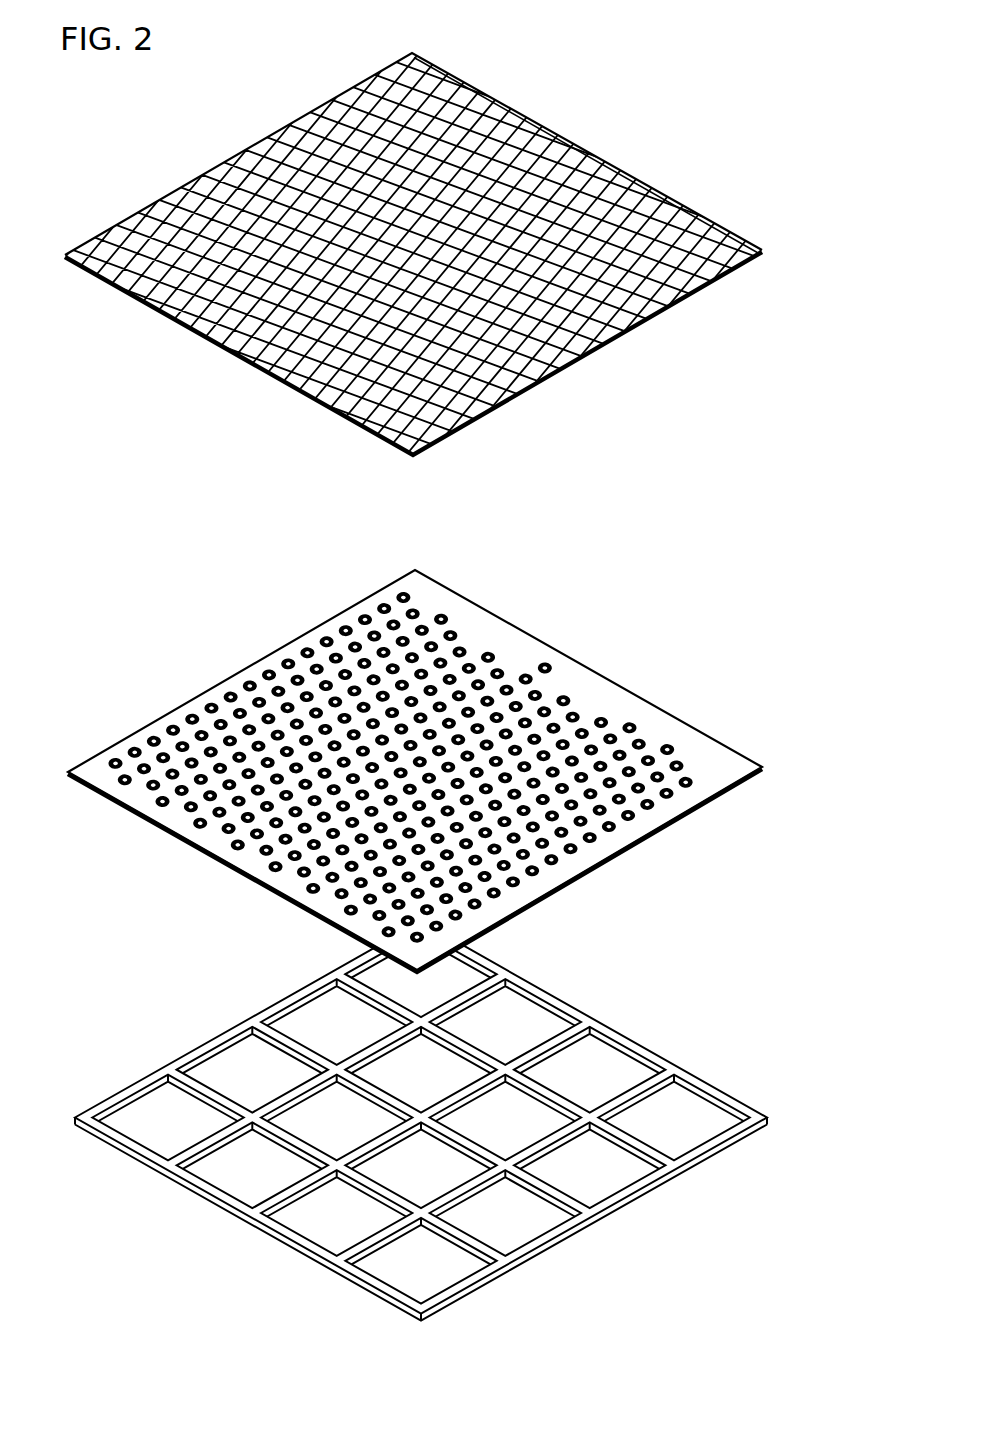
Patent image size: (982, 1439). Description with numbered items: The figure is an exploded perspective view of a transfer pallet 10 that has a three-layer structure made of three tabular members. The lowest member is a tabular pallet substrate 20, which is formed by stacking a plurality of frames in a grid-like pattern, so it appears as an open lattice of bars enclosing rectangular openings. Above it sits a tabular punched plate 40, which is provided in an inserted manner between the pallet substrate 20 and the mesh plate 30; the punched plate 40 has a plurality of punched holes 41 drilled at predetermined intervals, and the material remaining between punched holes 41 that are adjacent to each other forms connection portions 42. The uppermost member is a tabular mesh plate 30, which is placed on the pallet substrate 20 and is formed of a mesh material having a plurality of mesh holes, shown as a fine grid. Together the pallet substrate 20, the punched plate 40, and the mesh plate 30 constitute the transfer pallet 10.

The transfer pallet 10 is at (68, 149).
The pallet substrate 20 is at (653, 1058).
The mesh plate 30 is at (648, 195).
The punched plate 40 is at (683, 735).
The punched holes 41 is at (555, 683).
The connection portions 42 is at (580, 698).